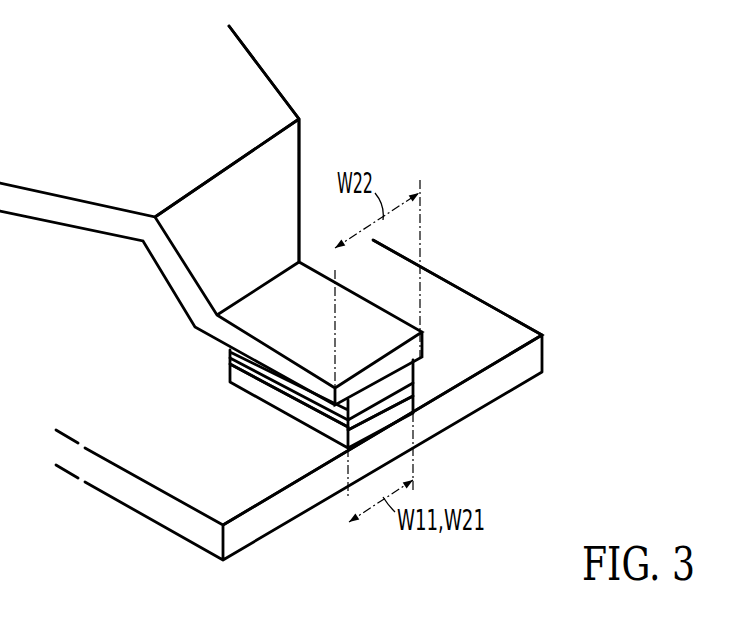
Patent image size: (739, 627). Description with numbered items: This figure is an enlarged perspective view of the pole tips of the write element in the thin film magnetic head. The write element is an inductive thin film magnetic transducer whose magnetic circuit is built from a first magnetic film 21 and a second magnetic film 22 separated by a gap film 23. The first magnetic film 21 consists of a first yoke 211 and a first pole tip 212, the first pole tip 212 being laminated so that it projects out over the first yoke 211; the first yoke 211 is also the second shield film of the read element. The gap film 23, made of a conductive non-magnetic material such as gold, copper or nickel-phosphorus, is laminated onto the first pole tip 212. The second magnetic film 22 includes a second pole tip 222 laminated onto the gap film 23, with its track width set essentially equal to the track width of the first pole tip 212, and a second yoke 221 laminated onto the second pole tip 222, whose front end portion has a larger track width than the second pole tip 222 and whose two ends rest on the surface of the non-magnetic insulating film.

The first magnetic film 21 is at (117, 505).
The first yoke 211 is at (512, 327).
The first pole tip 212 is at (297, 410).
The second magnetic film 22 is at (182, 322).
The second yoke 221 is at (263, 88).
The second pole tip 222 is at (403, 372).
The gap film 23 is at (230, 354).